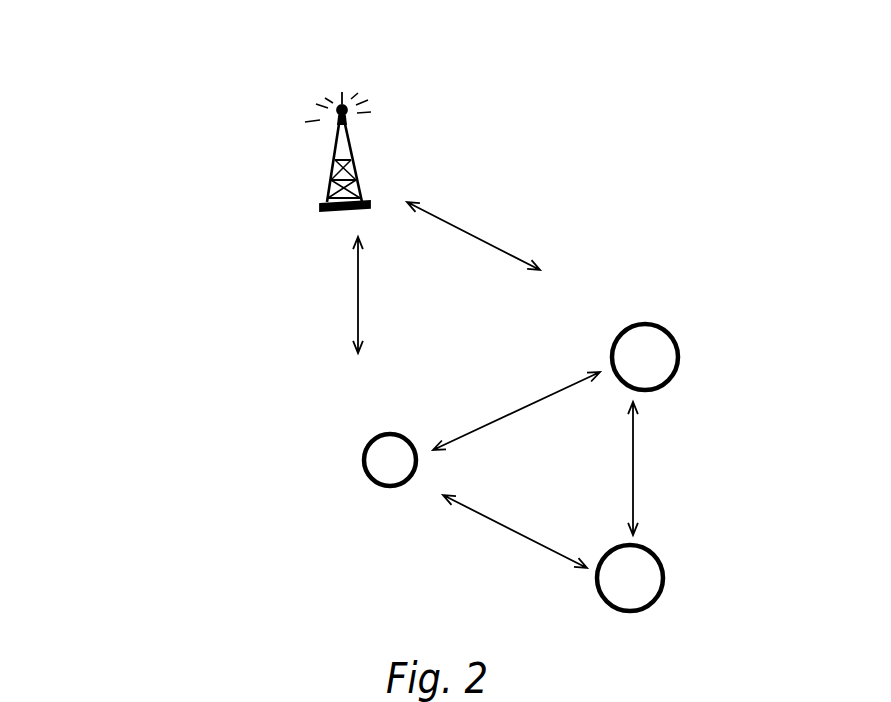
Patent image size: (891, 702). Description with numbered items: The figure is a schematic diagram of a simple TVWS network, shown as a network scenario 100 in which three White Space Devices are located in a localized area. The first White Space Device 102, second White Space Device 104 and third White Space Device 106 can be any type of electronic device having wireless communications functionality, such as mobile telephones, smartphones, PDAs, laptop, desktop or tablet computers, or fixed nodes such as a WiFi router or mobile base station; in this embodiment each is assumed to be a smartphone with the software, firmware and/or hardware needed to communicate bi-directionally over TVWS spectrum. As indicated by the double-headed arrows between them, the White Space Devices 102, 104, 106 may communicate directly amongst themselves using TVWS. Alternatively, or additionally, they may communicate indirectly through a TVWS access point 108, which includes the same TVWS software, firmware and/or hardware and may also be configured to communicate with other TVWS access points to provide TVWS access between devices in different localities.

The network scenario 100 is at (140, 116).
The first White Space Device 102 is at (363, 470).
The second White Space Device 104 is at (677, 340).
The third White Space Device 106 is at (663, 560).
The TVWS access point 108 is at (352, 147).